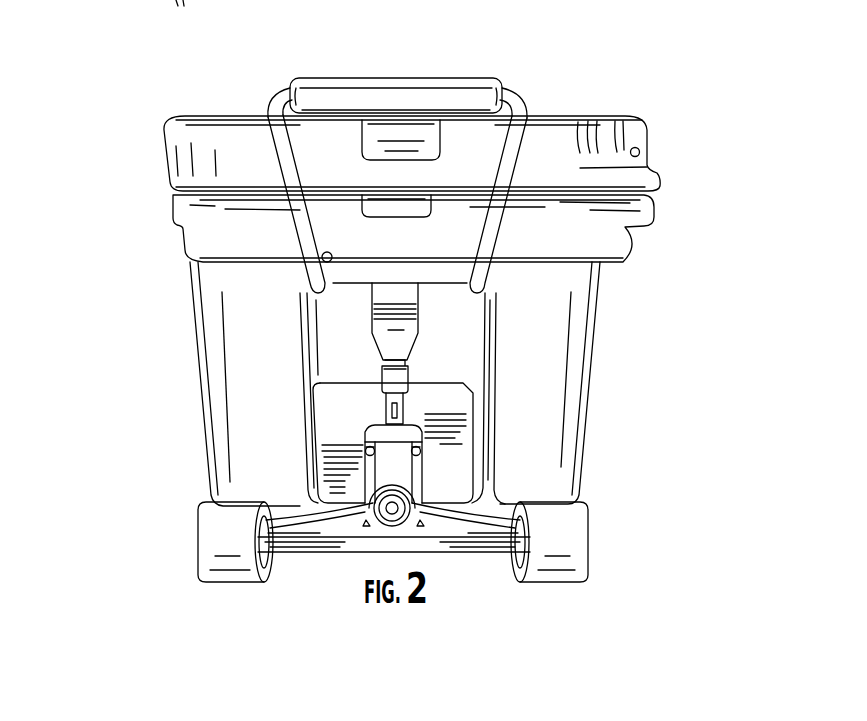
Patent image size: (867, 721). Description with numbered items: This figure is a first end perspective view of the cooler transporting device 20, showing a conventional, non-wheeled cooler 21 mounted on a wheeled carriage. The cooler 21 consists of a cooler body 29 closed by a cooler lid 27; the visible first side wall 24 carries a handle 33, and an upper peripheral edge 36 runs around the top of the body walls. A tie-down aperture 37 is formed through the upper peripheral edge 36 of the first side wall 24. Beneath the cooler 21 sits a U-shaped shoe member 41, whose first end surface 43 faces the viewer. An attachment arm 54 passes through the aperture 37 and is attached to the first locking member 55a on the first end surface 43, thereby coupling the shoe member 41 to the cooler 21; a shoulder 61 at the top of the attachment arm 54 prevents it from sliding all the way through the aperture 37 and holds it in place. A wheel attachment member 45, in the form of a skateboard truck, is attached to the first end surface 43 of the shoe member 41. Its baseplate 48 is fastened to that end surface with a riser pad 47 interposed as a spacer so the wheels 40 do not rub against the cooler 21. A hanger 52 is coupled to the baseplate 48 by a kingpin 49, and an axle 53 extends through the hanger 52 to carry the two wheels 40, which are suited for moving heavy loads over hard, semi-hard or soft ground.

The cooler transporting device 20 is at (260, 597).
The cooler 21 is at (681, 164).
The first side wall 24 is at (535, 358).
The cooler lid 27 is at (200, 135).
The cooler body 29 is at (178, 350).
The handle 33 is at (437, 95).
The upper peripheral edge 36 is at (180, 222).
The aperture 37 is at (628, 243).
The wheel 40 is at (222, 538).
The shoe member 41 is at (333, 448).
The first end surface 43 is at (455, 413).
The wheel attachment member 45 is at (455, 558).
The riser pad 47 is at (372, 428).
The baseplate 48 is at (410, 477).
The kingpin 49 is at (390, 515).
The hanger 52 is at (502, 548).
The axle 53 is at (107, 0).
The attachment arm 54 is at (418, 316).
The first locking member 55a is at (388, 395).
The shoulder 61 is at (628, 243).